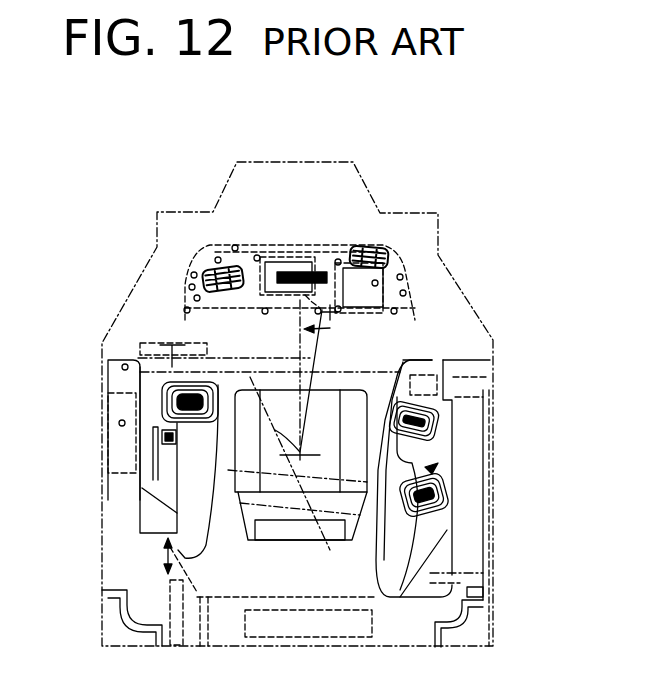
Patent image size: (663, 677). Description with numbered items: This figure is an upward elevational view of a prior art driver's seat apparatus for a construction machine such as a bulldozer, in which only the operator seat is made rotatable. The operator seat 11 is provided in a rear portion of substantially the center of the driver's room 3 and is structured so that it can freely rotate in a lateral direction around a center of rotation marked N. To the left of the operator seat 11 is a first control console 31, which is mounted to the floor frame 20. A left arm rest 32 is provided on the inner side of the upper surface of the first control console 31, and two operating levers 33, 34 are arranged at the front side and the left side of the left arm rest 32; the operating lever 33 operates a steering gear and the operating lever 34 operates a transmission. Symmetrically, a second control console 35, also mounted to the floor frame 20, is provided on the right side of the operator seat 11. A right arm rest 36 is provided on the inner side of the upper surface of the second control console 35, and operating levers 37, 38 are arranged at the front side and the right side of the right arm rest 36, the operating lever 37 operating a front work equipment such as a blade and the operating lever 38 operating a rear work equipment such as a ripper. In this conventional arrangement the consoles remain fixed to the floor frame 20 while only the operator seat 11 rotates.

The driver's room 3 is at (313, 162).
The operator seat 11 is at (360, 390).
The floor frame 20 is at (120, 538).
The first control console 31 is at (172, 368).
The left arm rest 32 is at (190, 505).
The operating lever 33 is at (188, 383).
The operating lever 34 is at (167, 428).
The second control console 35 is at (415, 400).
The right arm rest 36 is at (432, 572).
The operating lever 37 is at (450, 373).
The operating lever 38 is at (447, 466).